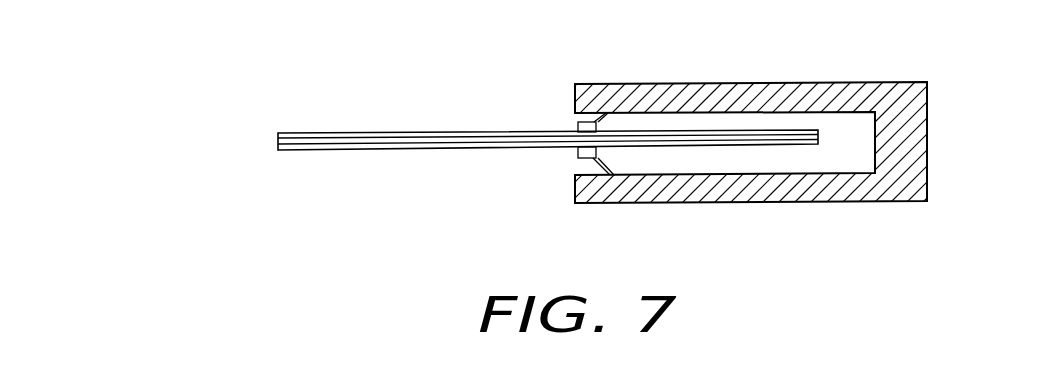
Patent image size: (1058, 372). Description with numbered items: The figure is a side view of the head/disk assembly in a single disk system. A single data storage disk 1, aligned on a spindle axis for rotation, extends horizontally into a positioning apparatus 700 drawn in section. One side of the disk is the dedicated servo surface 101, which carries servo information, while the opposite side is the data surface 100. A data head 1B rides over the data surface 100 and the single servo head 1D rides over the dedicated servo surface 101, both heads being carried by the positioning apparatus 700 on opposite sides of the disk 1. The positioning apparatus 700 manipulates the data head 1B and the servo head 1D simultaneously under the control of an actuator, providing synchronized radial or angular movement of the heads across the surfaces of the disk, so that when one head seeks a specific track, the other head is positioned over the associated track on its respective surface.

The positioning apparatus 700 is at (743, 83).
The data storage disk 1 is at (278, 142).
The data surface 100 is at (401, 133).
The dedicated servo surface 101 is at (372, 150).
The data head 1B is at (578, 125).
The servo head 1D is at (578, 153).